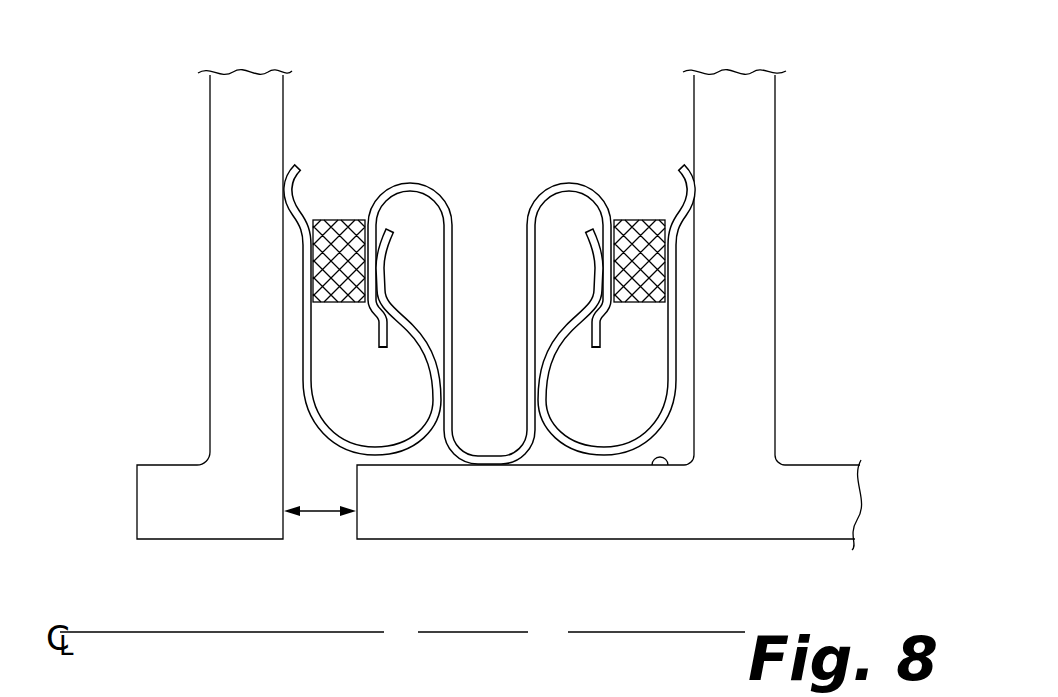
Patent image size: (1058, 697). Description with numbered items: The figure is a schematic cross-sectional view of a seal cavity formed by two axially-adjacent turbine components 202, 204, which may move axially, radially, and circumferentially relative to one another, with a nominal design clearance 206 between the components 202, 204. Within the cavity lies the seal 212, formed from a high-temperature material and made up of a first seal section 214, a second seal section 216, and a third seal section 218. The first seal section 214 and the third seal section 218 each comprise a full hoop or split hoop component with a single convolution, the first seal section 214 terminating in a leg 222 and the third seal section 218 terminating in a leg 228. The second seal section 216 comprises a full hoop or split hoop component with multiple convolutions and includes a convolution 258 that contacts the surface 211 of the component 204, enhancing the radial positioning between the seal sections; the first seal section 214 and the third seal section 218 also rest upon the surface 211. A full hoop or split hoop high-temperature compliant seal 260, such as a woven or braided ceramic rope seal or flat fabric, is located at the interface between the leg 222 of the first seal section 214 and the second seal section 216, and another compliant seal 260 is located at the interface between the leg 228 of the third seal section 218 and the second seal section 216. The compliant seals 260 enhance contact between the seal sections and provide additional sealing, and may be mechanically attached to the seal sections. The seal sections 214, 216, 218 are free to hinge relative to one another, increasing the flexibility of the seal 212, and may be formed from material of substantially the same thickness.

The turbine component 202 is at (218, 539).
The turbine component 204 is at (760, 539).
The nominal design clearance 206 is at (320, 514).
The surface 211 is at (668, 465).
The seal 212 is at (488, 237).
The first seal section 214 is at (288, 260).
The second seal section 216 is at (567, 167).
The third seal section 218 is at (691, 260).
The leg 222 is at (303, 349).
The leg 228 is at (676, 352).
The convolution 258 is at (488, 467).
The compliant seal 260 is at (340, 220).